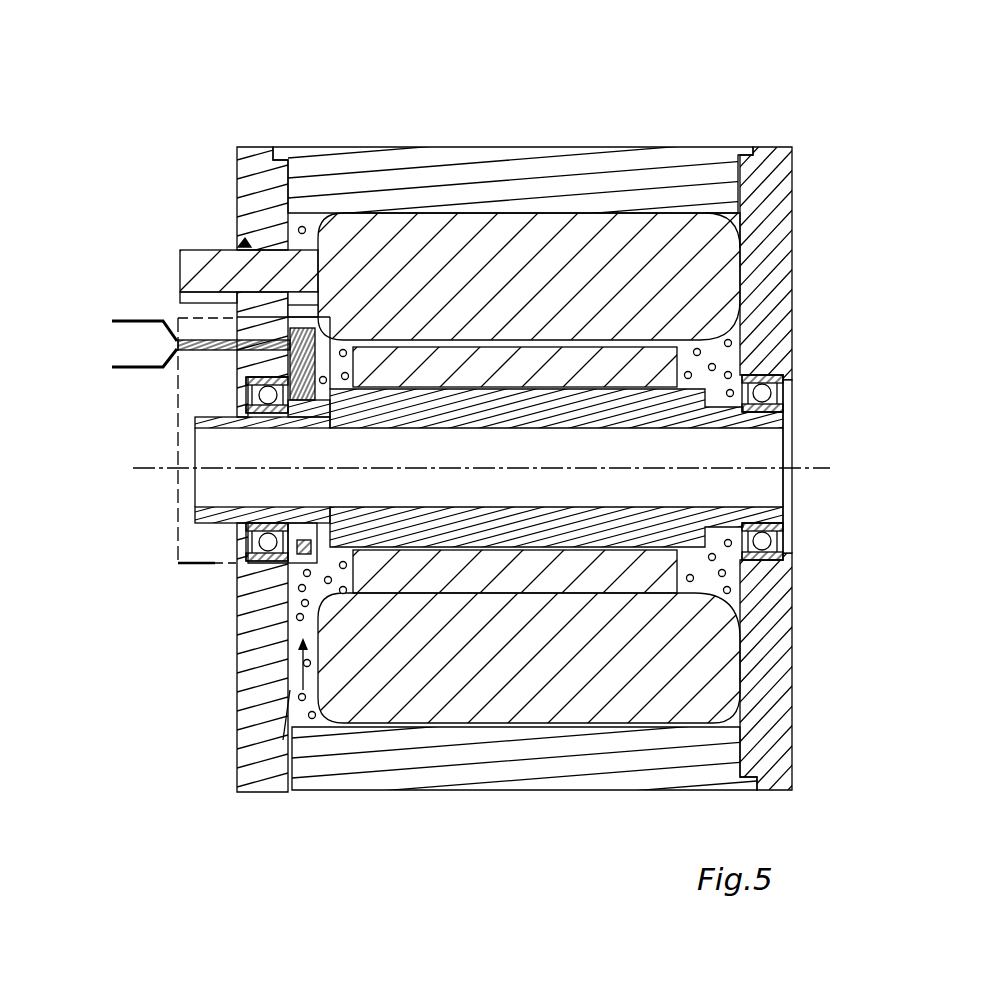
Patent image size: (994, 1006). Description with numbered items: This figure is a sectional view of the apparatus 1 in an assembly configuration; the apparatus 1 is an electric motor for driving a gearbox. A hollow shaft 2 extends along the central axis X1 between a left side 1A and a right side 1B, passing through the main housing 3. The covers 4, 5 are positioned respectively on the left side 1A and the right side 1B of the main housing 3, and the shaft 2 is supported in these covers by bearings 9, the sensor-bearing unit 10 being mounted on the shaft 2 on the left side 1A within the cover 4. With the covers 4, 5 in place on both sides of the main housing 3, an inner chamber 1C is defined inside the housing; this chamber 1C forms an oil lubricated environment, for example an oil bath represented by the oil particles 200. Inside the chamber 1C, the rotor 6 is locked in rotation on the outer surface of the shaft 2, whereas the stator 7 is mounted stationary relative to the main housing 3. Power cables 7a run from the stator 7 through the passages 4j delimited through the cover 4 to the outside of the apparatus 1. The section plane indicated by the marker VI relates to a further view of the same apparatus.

The apparatus 1 is at (196, 118).
The left side 1A is at (140, 610).
The right side 1B is at (812, 600).
The inner chamber 1C is at (295, 688).
The shaft 2 is at (213, 517).
The main housing 3 is at (508, 170).
The cover 4 is at (258, 157).
The passages 4j is at (240, 243).
The cover 5 is at (773, 160).
The rotor 6 is at (413, 573).
The stator 7 is at (571, 690).
The power cables 7a is at (205, 263).
The bearing 9 is at (765, 385).
The sensor-bearing unit 10 is at (210, 390).
The oil particles 200 is at (283, 740).
The central axis X1 is at (467, 470).
The section line VI is at (178, 533).